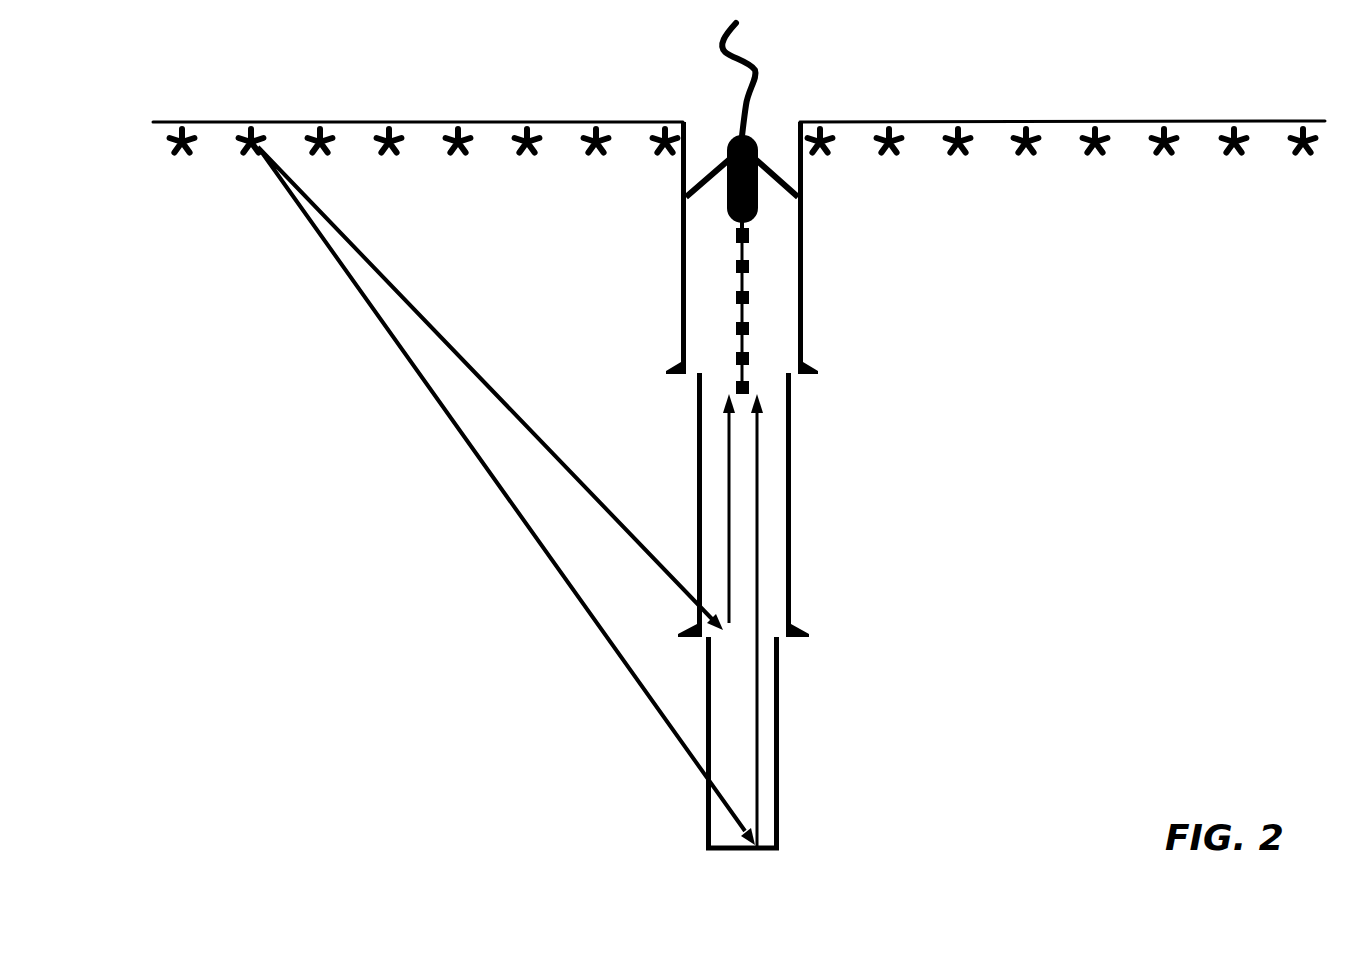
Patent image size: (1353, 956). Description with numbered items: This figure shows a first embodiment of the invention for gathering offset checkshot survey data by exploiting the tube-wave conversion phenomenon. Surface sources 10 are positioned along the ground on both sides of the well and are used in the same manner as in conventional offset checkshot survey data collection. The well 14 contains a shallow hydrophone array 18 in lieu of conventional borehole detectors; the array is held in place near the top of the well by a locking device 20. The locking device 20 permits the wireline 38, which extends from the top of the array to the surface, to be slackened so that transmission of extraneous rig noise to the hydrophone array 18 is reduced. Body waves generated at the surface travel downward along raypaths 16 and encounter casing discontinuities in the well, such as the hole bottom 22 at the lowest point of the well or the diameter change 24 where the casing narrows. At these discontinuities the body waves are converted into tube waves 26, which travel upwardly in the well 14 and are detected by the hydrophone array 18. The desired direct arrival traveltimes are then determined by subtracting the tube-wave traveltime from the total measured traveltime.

The surface sources 10 is at (252, 122).
The well 14 is at (682, 226).
The raypaths 16 is at (482, 377).
The shallow hydrophone array 18 is at (757, 229).
The locking device 20 is at (785, 178).
The hole bottom 22 is at (778, 846).
The diameter change 24 is at (718, 638).
The tube waves 26 is at (732, 565).
The wireline 38 is at (767, 75).